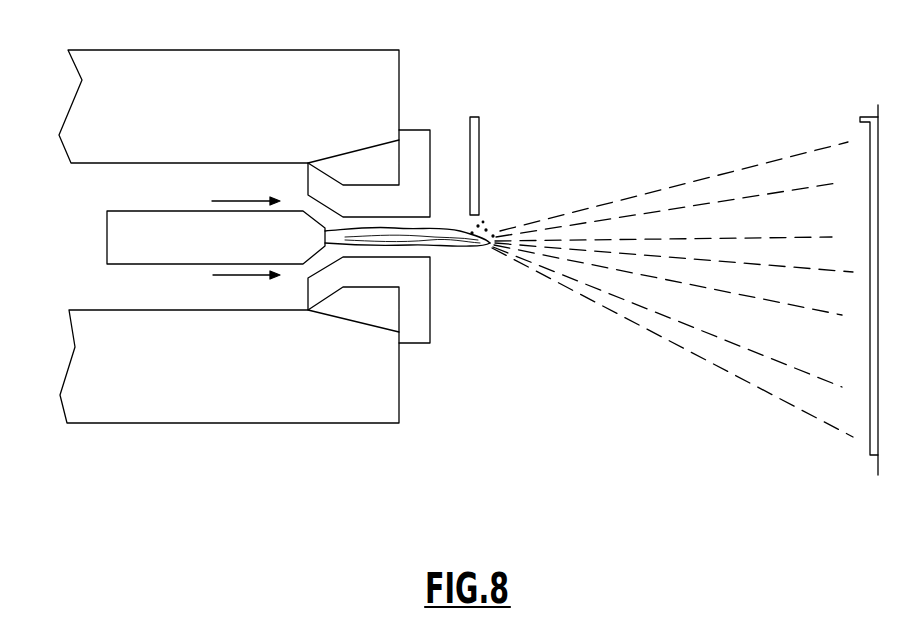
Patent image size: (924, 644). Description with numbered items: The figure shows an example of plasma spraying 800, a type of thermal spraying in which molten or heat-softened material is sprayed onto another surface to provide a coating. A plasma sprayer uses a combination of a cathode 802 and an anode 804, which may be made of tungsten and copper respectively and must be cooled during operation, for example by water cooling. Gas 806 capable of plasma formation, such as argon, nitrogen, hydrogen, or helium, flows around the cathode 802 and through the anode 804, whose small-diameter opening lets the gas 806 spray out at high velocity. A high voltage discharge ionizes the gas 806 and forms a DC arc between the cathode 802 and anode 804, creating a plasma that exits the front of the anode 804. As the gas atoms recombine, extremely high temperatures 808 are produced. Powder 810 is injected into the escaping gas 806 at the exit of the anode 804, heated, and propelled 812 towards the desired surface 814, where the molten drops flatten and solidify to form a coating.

The plasma spraying 800 is at (584, 69).
The cathode 802 is at (92, 231).
The anode 804 is at (433, 110).
The gas 806 is at (221, 249).
The extremely high temperatures 808 is at (450, 268).
The powder 810 is at (495, 212).
The propelled 812 is at (692, 160).
The desired surface 814 is at (849, 113).